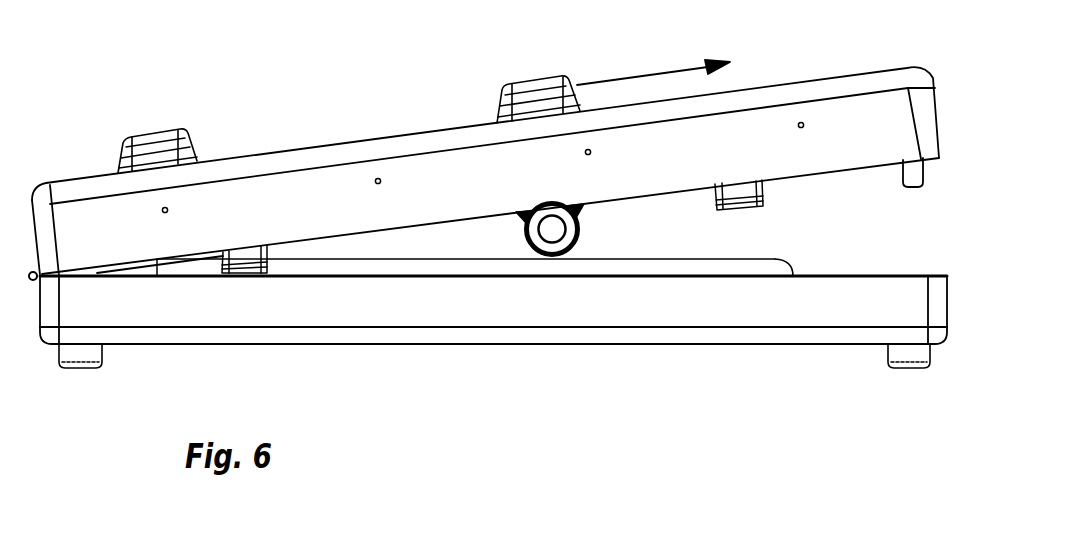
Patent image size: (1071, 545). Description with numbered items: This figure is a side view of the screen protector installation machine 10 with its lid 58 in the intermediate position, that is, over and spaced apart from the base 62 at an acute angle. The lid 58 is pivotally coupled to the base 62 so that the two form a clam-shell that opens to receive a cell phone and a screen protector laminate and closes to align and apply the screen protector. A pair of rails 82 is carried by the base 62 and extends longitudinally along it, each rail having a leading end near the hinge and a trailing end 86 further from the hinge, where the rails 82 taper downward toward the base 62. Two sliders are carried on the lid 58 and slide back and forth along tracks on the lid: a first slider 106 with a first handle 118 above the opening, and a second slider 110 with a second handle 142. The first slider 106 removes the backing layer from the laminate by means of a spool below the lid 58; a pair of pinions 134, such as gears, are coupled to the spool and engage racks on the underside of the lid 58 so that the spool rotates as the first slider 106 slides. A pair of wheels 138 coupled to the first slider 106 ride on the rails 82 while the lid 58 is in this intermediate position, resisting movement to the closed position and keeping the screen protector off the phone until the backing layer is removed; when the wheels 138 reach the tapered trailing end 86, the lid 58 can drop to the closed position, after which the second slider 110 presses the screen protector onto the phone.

The screen protector installation machine 10 is at (383, 378).
The lid 58 is at (843, 105).
The base 62 is at (228, 313).
The rails 82 is at (466, 263).
The trailing end 86 is at (778, 262).
The first slider 106 is at (500, 90).
The second slider 110 is at (128, 138).
The first handle 118 is at (553, 88).
The pinions 134 is at (530, 240).
The wheels 138 is at (580, 230).
The second handle 142 is at (178, 131).